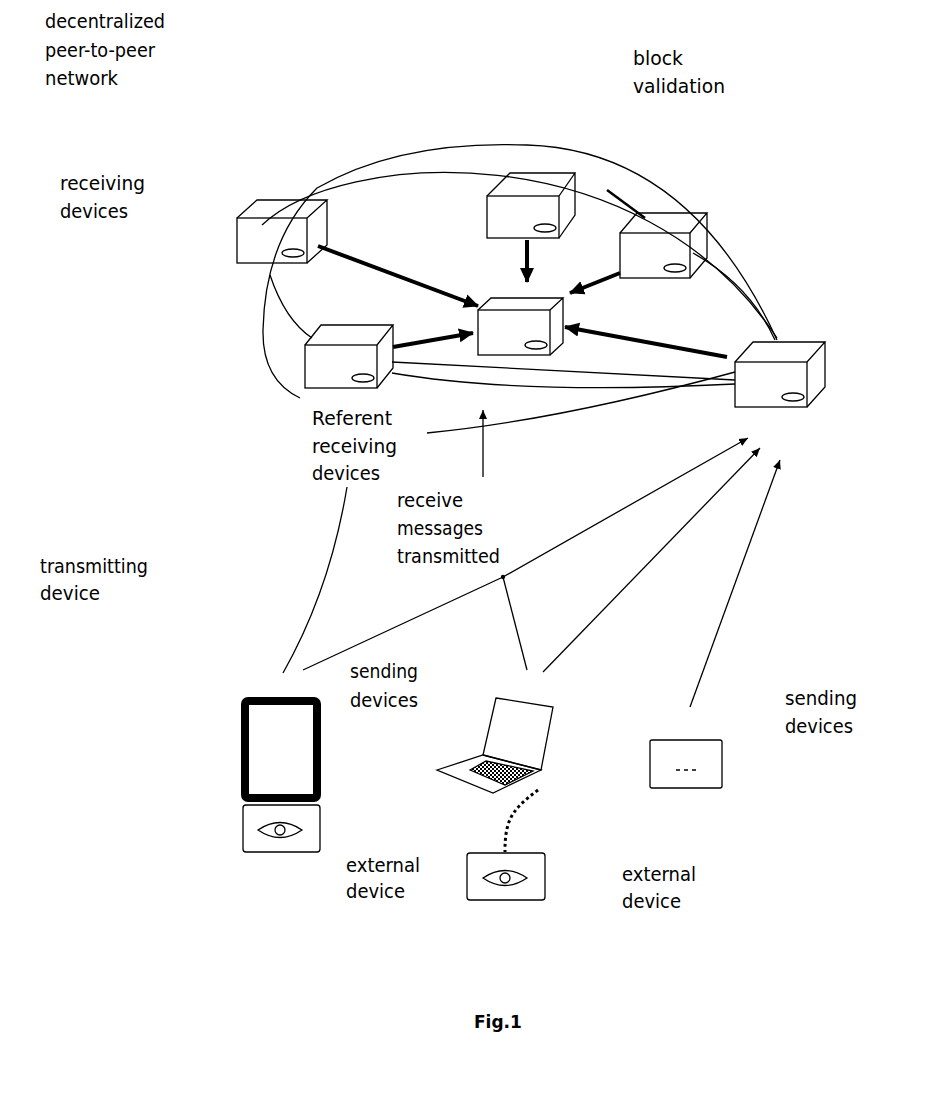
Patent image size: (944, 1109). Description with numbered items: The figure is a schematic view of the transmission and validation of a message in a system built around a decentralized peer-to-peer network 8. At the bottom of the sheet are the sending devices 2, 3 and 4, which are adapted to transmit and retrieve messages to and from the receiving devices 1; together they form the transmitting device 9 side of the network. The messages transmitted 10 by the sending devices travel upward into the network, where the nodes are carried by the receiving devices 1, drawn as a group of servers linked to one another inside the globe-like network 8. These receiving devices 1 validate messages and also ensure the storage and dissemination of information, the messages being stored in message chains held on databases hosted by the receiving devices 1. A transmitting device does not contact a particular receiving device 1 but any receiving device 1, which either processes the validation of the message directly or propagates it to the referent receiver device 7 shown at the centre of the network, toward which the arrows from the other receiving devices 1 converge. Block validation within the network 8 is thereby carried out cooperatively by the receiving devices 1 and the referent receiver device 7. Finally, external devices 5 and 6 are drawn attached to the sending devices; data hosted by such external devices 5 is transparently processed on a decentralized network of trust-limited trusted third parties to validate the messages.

The receiving device 1 is at (243, 258).
The sending device 2 is at (305, 772).
The sending device 3 is at (537, 878).
The sending device 4 is at (688, 752).
The external device 5 is at (500, 737).
The external device 6 is at (308, 829).
The referent receiver device 7 is at (508, 335).
The decentralized peer-to-peer network 8 is at (201, 163).
The transmitting device 9 is at (201, 672).
The transmitted messages 10 is at (410, 620).